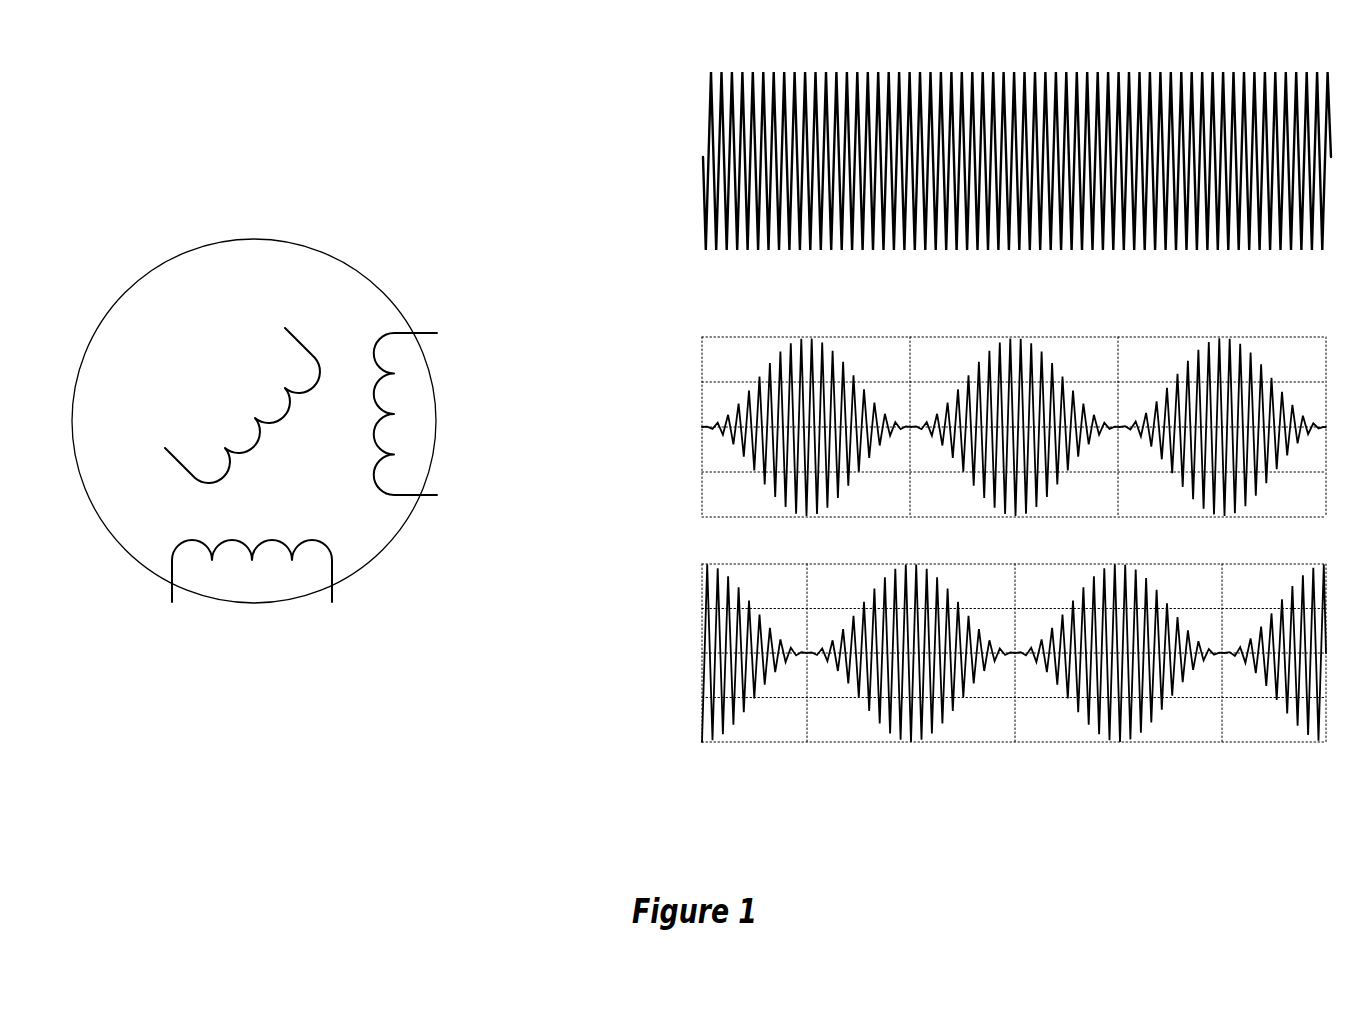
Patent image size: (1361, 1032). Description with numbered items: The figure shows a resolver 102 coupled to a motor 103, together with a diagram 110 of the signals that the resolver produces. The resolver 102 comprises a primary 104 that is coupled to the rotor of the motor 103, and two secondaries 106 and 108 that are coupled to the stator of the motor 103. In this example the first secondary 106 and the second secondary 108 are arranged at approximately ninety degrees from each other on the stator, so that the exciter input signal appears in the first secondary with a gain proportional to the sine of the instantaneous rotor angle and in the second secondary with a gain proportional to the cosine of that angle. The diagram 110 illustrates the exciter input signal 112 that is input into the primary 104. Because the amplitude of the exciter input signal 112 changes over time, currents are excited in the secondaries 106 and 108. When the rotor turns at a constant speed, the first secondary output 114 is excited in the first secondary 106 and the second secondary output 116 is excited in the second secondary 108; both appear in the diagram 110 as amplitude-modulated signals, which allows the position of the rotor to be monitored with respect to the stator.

The resolver 102 is at (462, 226).
The motor 103 is at (273, 242).
The primary 104 is at (302, 343).
The first secondary 106 is at (273, 538).
The second secondary 108 is at (407, 334).
The diagram 110 is at (1016, 378).
The exciter input signal 112 is at (1243, 77).
The first secondary output 114 is at (1237, 343).
The second secondary output 116 is at (1162, 600).